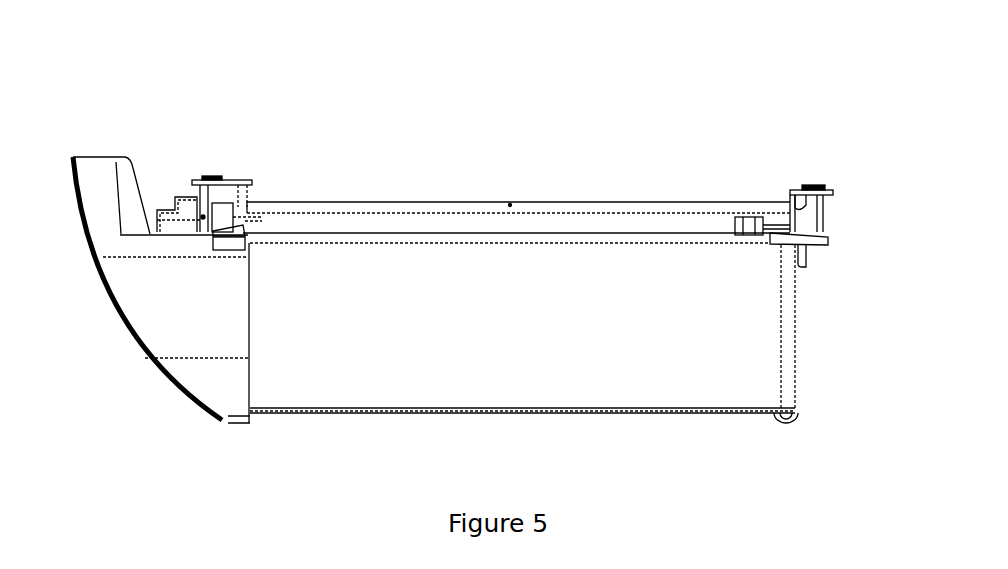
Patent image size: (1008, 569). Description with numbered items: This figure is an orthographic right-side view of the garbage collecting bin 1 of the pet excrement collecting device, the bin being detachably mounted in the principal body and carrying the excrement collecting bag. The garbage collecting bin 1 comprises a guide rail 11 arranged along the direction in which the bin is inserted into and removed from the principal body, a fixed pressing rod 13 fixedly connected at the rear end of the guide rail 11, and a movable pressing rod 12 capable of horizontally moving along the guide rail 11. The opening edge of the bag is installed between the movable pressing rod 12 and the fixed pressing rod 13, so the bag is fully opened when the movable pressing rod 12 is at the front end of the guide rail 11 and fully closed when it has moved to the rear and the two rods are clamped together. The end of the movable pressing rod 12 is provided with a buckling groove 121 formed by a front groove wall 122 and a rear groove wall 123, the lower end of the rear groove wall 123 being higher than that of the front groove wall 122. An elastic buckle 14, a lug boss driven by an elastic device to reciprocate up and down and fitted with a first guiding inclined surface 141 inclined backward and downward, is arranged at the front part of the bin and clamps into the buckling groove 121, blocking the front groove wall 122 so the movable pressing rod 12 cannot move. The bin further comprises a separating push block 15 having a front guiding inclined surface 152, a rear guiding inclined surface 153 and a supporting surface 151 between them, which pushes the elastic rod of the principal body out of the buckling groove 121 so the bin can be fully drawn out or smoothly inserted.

The garbage collecting bin 1 is at (445, 95).
The guide rail 11 is at (510, 205).
The movable pressing rod 12 is at (227, 176).
The buckling groove 121 is at (187, 190).
The front groove wall 122 is at (203, 217).
The rear groove wall 123 is at (242, 222).
The fixed pressing rod 13 is at (798, 183).
The elastic buckle 14 is at (237, 245).
The first guiding inclined surface 141 is at (245, 230).
The separating push block 15 is at (752, 235).
The supporting surface 151 is at (752, 217).
The front guiding inclined surface 152 is at (735, 226).
The rear guiding inclined surface 153 is at (828, 231).